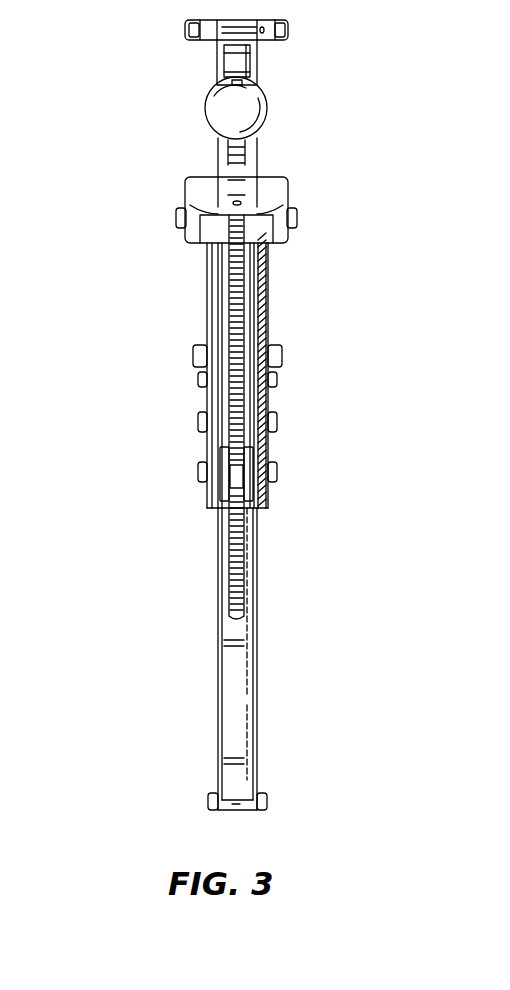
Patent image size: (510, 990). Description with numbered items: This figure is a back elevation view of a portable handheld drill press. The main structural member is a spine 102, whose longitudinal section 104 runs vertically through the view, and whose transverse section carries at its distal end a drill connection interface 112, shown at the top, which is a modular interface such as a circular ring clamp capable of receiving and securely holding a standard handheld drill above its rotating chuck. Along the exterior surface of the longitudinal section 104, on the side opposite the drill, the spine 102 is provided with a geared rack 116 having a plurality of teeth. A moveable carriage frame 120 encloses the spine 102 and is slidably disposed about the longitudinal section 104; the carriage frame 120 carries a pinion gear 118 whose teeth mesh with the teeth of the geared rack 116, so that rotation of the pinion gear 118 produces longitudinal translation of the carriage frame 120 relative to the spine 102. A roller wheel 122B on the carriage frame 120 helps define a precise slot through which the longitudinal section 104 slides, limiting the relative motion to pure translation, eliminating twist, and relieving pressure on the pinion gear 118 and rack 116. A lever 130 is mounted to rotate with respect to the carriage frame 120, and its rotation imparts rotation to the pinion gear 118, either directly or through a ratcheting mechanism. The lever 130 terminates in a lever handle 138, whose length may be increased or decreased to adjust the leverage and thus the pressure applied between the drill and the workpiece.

The spine 102 is at (207, 65).
The longitudinal section 104 is at (236, 676).
The drill connection interface 112 is at (290, 31).
The geared rack 116 is at (235, 285).
The pinion gear 118 is at (237, 246).
The carriage frame 120 is at (266, 403).
The roller wheel 122B is at (235, 476).
The lever 130 is at (176, 186).
The lever handle 138 is at (218, 112).